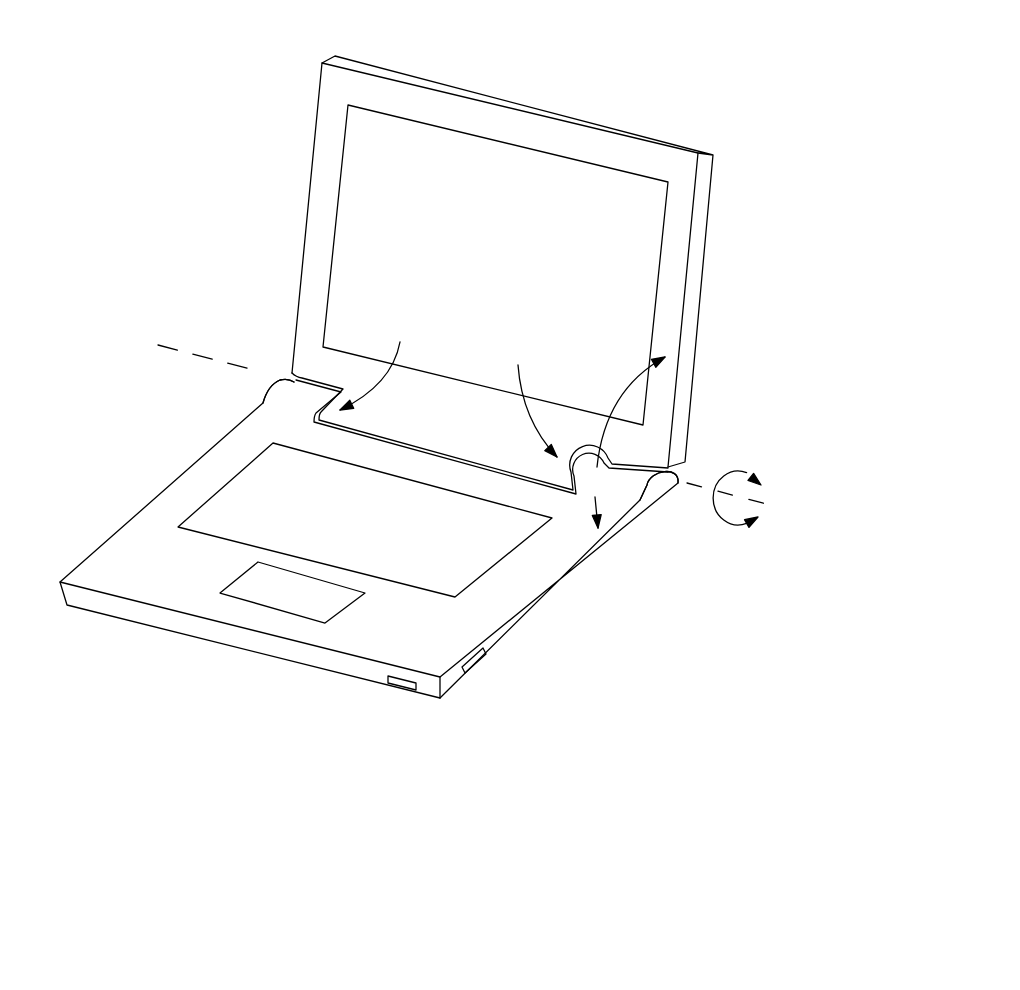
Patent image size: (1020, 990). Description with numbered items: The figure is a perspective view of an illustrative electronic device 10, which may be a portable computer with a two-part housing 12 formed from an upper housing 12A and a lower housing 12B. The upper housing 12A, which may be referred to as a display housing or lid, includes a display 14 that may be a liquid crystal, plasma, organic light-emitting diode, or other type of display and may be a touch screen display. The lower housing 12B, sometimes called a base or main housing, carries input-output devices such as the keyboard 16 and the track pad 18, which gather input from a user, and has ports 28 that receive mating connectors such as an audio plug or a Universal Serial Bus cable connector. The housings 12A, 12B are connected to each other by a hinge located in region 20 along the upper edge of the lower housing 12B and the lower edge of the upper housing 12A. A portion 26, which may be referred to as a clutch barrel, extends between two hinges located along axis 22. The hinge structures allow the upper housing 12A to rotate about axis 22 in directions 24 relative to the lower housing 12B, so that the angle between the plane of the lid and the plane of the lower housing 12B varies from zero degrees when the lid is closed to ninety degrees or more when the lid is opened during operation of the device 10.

The electronic device 10 is at (737, 45).
The housing 12 is at (685, 402).
The upper housing 12A is at (307, 63).
The lower housing 12B is at (257, 384).
The display 14 is at (640, 317).
The keyboard 16 is at (467, 573).
The track pad 18 is at (278, 600).
The hinge region 20 is at (297, 395).
The axis 22 is at (147, 339).
The directions 24 is at (737, 467).
The clutch barrel 26 is at (495, 450).
The ports 28 is at (400, 687).